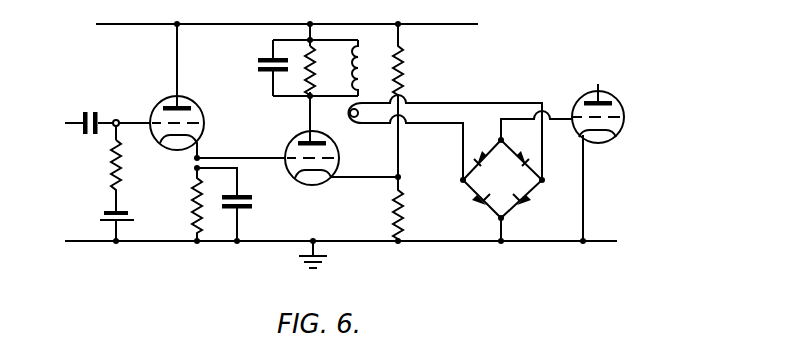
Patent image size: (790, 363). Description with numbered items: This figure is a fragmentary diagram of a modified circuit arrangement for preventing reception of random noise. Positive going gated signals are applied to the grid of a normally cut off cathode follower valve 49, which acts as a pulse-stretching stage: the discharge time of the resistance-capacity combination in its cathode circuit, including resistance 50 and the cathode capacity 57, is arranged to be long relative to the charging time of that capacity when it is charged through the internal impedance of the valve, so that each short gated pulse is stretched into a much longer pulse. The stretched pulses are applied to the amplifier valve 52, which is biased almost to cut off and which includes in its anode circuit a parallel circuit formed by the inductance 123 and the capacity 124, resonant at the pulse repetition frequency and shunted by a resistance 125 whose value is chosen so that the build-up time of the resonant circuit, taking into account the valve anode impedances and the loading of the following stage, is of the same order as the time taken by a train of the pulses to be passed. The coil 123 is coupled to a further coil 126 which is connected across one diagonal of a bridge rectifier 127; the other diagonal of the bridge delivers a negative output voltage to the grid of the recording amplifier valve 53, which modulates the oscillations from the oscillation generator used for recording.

The cathode follower valve 49 is at (160, 114).
The resistance 50 is at (190, 200).
The cathode bypass capacitor 57 is at (254, 205).
The amplifier 52 is at (293, 145).
The capacity 124 is at (262, 63).
The resistance 125 is at (313, 77).
The inductance 123 is at (358, 78).
The coupling coil 126 is at (358, 124).
The bridge rectifier 127 is at (487, 178).
The recording amplifier valve 53 is at (624, 111).